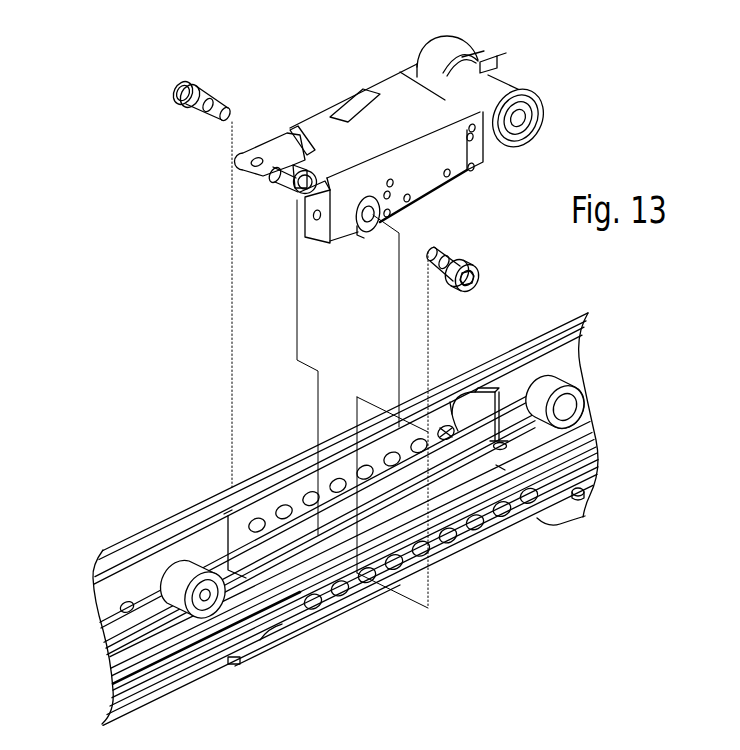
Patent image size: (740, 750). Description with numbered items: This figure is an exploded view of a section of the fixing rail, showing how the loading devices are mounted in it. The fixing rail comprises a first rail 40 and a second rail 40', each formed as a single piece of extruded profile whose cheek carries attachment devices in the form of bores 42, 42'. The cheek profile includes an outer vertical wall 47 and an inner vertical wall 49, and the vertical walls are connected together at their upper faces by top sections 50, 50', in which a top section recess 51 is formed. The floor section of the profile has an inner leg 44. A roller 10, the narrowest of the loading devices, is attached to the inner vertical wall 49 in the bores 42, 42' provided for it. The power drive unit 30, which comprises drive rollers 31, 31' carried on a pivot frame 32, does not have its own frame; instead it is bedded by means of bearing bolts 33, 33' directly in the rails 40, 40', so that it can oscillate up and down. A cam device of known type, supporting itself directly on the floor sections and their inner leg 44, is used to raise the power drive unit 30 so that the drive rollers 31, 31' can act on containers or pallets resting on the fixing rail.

The roller 10 is at (171, 560).
The power drive unit 30 is at (407, 124).
The roller 31 is at (463, 45).
The roller 31' is at (530, 104).
The pivot frame 32 is at (462, 176).
The bearing bolt 33 is at (207, 86).
The bearing bolt 33' is at (479, 268).
The rail 40 is at (320, 519).
The rail 40' is at (389, 540).
The first attachment device/bore 42 is at (324, 479).
The first attachment device/bore 42' is at (423, 549).
The inner leg 44 is at (356, 571).
The outer vertical wall 47 is at (473, 415).
The inner vertical wall 49 is at (513, 400).
The top section 50 is at (332, 448).
The top section 50' is at (350, 544).
The top section recess 51 is at (456, 437).